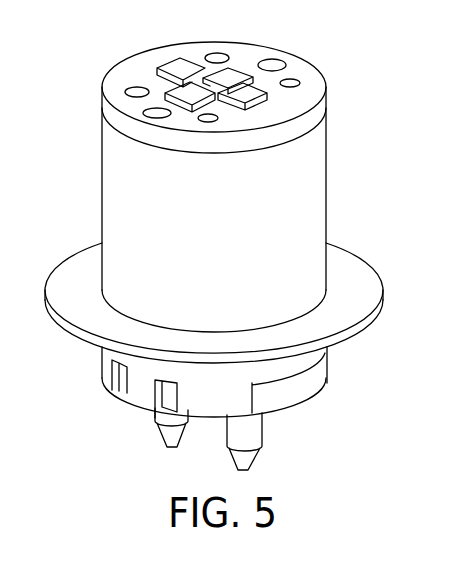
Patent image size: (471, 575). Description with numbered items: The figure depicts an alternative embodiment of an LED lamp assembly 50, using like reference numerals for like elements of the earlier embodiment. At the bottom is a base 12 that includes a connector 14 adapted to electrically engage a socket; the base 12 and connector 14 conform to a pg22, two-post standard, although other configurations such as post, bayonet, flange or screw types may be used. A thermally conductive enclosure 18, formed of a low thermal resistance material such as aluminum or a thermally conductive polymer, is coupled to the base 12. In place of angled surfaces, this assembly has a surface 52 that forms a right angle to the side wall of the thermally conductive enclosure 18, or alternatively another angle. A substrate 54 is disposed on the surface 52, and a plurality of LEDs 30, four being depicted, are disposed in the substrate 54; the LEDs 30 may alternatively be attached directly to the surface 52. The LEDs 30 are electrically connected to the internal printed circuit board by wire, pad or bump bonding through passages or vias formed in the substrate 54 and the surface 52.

The LED lamp assembly 50 is at (353, 75).
The surface 52 is at (300, 137).
The substrate 54 is at (128, 88).
The LEDs 30 is at (230, 73).
The thermally conductive enclosure 18 is at (327, 207).
The base 12 is at (327, 367).
The connector 14 is at (147, 437).